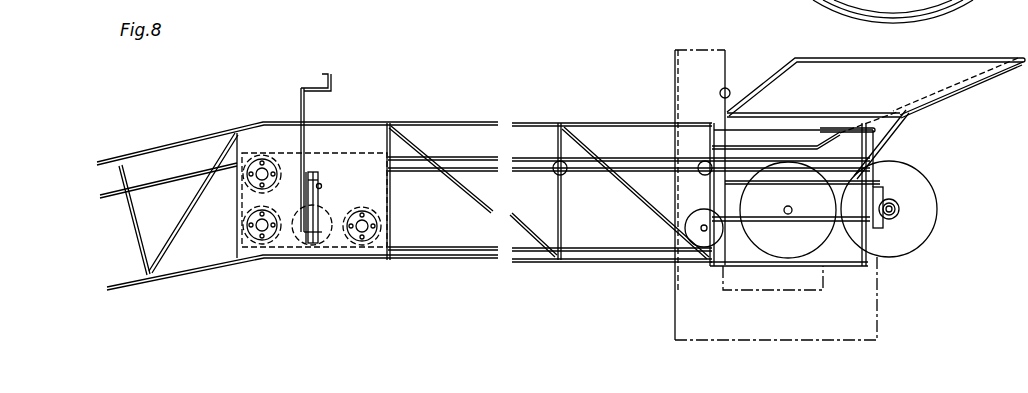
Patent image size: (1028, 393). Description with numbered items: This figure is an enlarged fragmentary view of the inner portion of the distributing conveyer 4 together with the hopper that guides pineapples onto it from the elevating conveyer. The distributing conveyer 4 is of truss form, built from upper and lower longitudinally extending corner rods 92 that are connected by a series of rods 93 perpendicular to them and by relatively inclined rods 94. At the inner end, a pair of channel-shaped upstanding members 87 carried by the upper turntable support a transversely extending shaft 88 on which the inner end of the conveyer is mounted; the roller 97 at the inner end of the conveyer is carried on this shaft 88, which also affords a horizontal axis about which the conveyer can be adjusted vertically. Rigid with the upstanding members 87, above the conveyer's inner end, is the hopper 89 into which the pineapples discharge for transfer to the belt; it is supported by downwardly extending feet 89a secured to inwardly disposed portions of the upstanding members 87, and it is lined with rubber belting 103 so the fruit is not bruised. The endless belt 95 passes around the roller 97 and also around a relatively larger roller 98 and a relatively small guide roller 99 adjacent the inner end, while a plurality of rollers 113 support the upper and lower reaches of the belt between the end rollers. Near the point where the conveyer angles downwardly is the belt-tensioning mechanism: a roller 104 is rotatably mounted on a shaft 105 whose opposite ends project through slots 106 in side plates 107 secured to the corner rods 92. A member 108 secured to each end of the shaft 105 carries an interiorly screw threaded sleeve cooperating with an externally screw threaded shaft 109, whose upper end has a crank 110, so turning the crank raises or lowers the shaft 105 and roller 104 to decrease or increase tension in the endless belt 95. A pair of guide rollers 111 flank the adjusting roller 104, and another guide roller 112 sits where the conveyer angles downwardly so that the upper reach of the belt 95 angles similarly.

The distributing conveyer 4 is at (465, 260).
The upstanding members 87 is at (741, 43).
The shaft 88 is at (900, 214).
The hopper 89 is at (968, 58).
The feet 89a is at (893, 136).
The corner rods 92 is at (201, 135).
The rods 93 is at (140, 233).
The inclined rods 94 is at (520, 203).
The endless belt 95 is at (160, 177).
The roller 97 is at (922, 200).
The relatively larger roller 98 is at (807, 242).
The guide roller 99 is at (687, 228).
The rubber belting 103 is at (923, 87).
The roller 104 is at (323, 250).
The shaft 105 is at (318, 226).
The slots 106 is at (320, 188).
The side plates 107 is at (376, 135).
The member 108 is at (306, 205).
The screw threaded shaft 109 is at (305, 143).
The crank 110 is at (322, 86).
The guide rollers 111 is at (240, 223).
The guide roller 112 is at (250, 153).
The rollers 113 is at (700, 174).